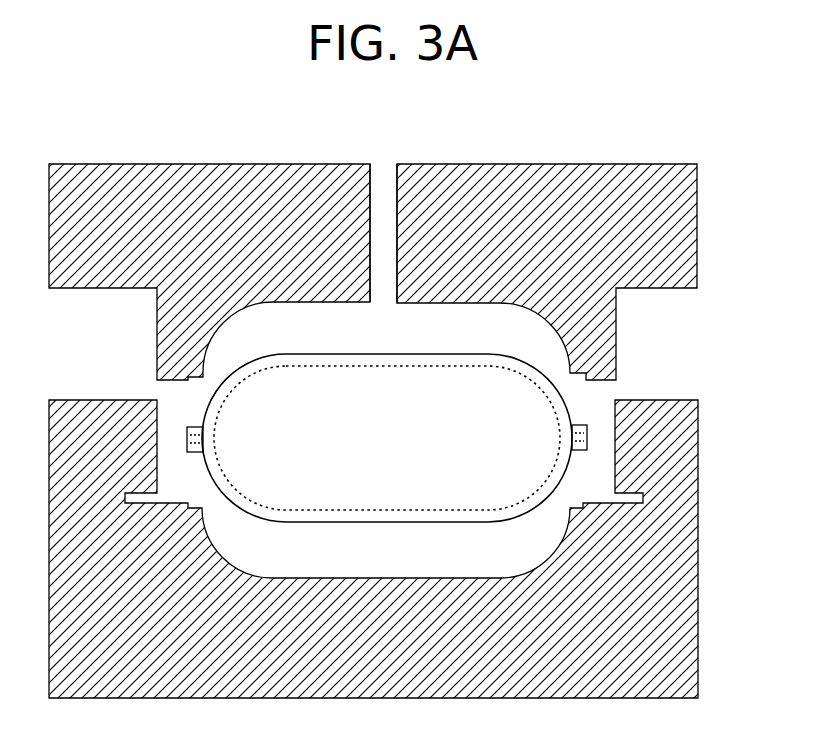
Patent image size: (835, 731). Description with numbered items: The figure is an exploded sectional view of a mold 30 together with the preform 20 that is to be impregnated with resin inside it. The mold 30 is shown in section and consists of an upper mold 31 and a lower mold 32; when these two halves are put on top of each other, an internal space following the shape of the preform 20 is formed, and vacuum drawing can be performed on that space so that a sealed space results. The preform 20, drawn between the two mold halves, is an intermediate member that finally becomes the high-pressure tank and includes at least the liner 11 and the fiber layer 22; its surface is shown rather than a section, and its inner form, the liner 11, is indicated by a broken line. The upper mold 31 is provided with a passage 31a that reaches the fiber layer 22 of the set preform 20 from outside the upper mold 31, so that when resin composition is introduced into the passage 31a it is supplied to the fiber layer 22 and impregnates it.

The mold 30 is at (420, 390).
The upper mold 31 is at (420, 240).
The passage 31a is at (383, 177).
The lower mold 32 is at (710, 440).
The preform 20 is at (458, 313).
The fiber layer 22 is at (290, 360).
The liner 11 is at (368, 392).